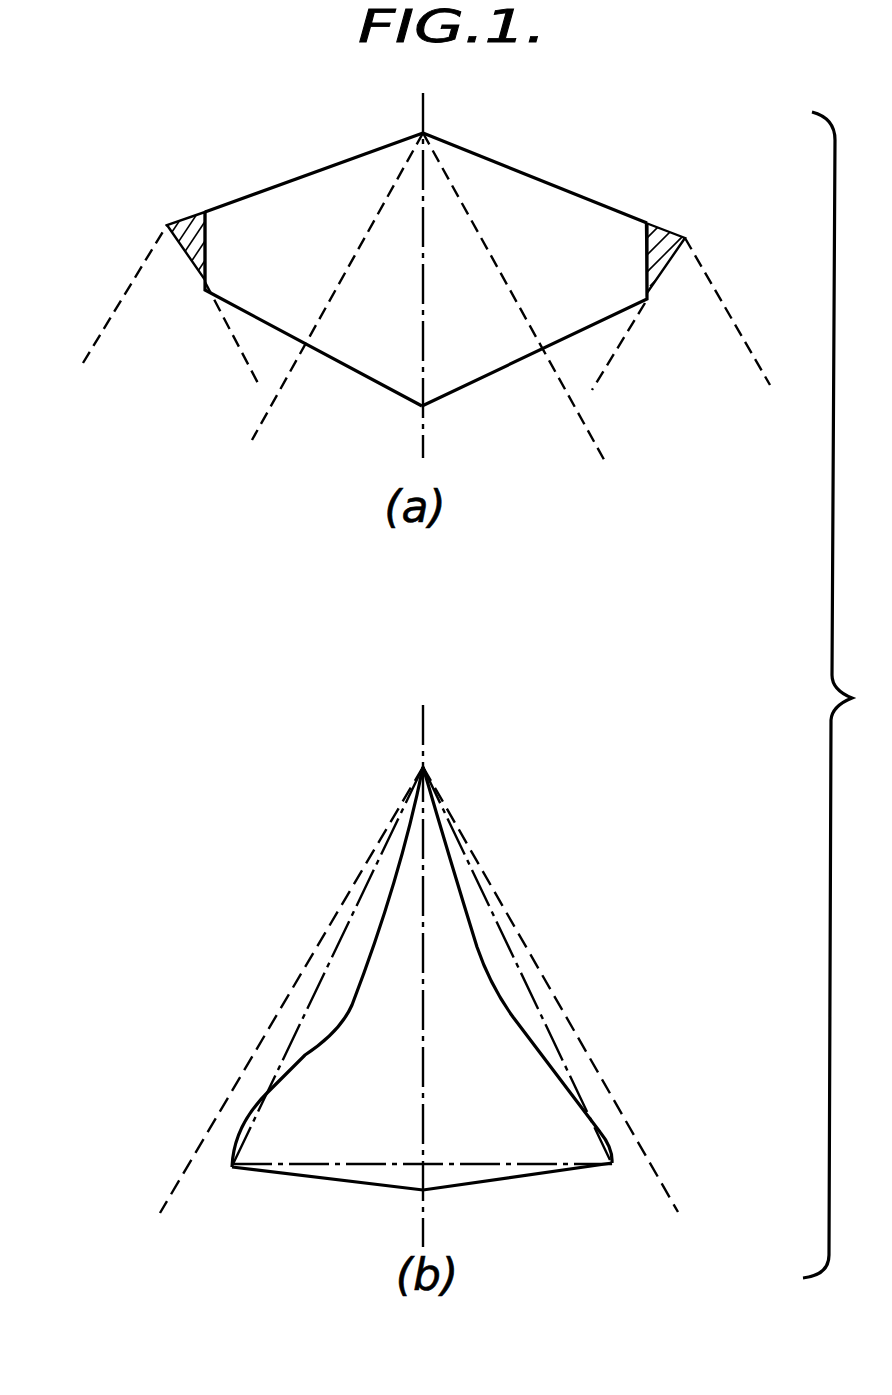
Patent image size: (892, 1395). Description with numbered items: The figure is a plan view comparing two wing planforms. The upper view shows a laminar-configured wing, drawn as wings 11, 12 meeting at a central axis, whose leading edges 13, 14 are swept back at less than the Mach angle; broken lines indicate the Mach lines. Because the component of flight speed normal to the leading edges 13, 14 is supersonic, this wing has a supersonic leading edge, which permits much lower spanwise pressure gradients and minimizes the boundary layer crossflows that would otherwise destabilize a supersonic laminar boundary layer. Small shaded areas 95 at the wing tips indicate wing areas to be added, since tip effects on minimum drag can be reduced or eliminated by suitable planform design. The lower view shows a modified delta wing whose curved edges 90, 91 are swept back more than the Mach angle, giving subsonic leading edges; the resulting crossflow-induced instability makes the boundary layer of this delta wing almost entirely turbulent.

The laminar-configured wing 11 is at (297, 203).
The laminar-configured wing 12 is at (575, 215).
The leading edge 13 is at (273, 187).
The leading edge 14 is at (563, 188).
The removed hatched corner portion 95 is at (192, 217).
The edge 90 is at (344, 1012).
The edge 91 is at (508, 1026).